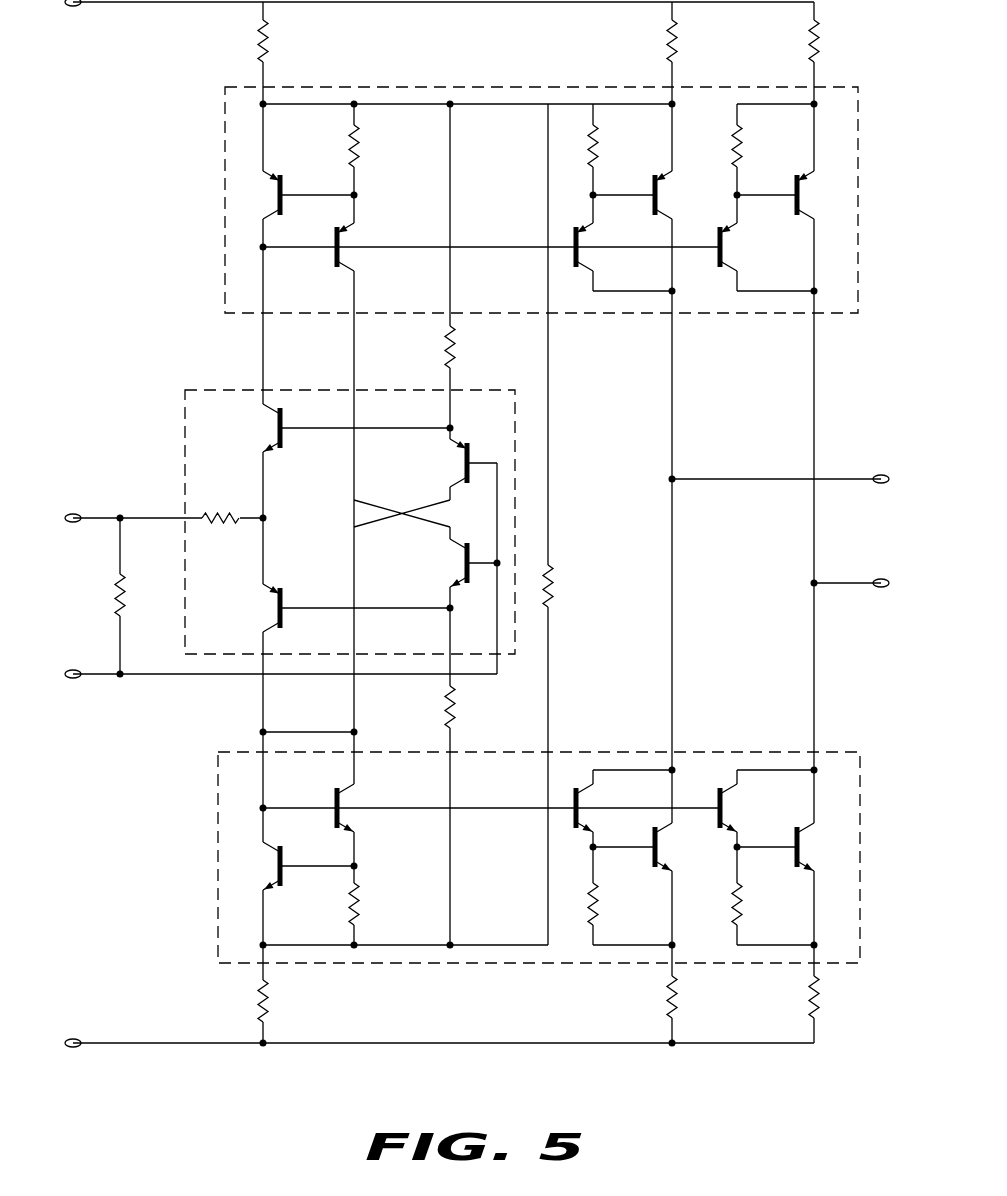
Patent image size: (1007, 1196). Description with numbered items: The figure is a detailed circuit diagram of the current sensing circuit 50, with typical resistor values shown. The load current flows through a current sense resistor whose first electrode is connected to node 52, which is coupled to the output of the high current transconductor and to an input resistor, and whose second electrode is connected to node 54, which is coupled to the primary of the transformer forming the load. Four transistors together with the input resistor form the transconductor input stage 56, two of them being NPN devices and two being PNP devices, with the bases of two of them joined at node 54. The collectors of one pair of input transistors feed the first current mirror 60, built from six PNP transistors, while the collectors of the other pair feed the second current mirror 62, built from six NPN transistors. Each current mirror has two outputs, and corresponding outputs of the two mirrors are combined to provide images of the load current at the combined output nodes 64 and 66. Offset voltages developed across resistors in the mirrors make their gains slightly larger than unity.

The current sensing circuit 50 is at (312, 1153).
The node 52 is at (73, 514).
The node 54 is at (73, 670).
The transconductor input stage 56 is at (185, 438).
The first current mirror 60 is at (742, 313).
The second current mirror 62 is at (746, 752).
The output 64 is at (881, 475).
The output 66 is at (881, 579).